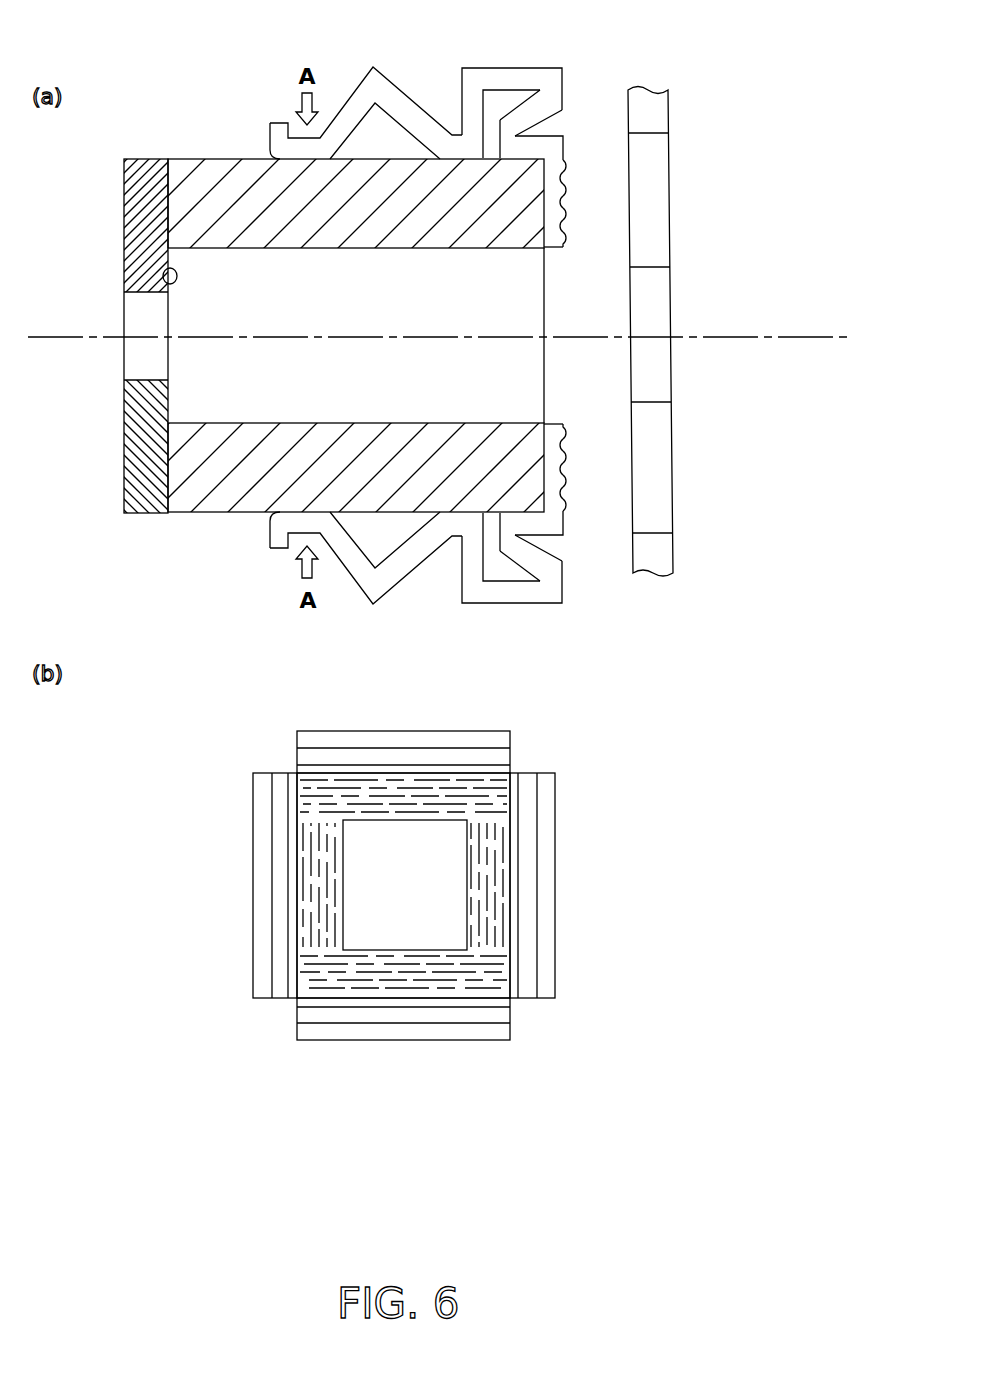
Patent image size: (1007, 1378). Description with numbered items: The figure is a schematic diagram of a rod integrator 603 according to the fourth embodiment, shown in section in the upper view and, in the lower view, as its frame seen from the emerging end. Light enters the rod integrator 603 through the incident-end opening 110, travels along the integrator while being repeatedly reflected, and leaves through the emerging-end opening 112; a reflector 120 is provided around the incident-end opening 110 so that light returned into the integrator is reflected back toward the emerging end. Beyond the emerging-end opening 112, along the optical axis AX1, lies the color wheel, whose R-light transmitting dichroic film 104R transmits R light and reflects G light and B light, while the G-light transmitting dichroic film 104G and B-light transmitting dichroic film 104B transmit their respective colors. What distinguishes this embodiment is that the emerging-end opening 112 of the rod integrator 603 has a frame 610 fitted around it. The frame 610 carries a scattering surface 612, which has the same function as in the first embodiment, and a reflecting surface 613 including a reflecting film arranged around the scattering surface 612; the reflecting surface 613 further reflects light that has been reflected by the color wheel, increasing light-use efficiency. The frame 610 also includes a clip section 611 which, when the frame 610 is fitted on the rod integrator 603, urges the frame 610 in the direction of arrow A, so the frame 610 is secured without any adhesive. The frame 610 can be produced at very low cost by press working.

The rod integrator 603 is at (192, 108).
The clip section 611 is at (407, 90).
The frame 610 is at (505, 62).
The reflecting surface 613 is at (547, 117).
The scattering surface 612 is at (566, 207).
The R-light transmitting dichroic film 104R is at (670, 107).
The G-light transmitting dichroic film 104G is at (670, 195).
The B-light transmitting dichroic film 104B is at (670, 288).
The optical axis AX1 is at (775, 331).
The reflector 120 is at (163, 277).
The incident-end opening 110 is at (125, 327).
The emerging-end opening 112 is at (547, 410).